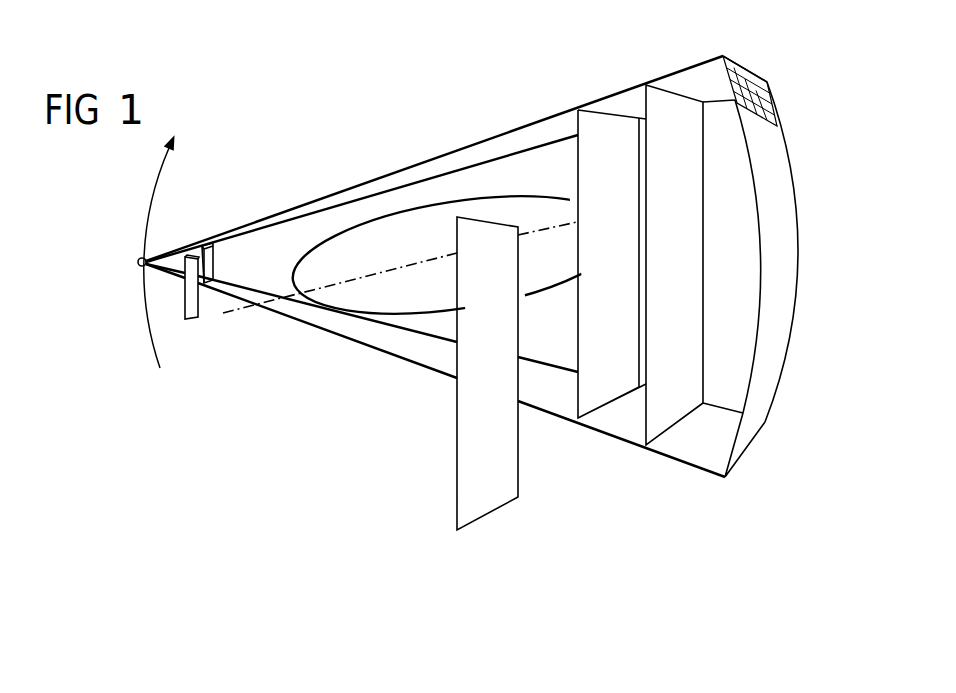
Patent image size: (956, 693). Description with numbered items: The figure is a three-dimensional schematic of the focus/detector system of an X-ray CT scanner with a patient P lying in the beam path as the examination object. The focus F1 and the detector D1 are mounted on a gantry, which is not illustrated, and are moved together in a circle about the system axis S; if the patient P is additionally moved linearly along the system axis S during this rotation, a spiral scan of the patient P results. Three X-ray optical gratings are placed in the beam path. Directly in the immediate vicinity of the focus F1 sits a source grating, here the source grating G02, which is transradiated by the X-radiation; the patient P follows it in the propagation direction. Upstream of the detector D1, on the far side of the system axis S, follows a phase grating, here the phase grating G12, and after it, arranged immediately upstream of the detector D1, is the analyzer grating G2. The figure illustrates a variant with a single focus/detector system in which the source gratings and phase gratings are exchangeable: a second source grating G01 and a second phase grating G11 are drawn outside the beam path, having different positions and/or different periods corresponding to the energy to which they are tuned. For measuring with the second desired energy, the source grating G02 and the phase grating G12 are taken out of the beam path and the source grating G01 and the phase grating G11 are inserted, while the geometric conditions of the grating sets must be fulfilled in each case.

The focus F1 is at (139, 261).
The source grating G01 is at (192, 319).
The source grating G02 is at (211, 244).
The system axis S is at (238, 312).
The patient P is at (395, 313).
The phase grating G11 is at (457, 489).
The phase grating G12 is at (603, 108).
The analyzer grating G2 is at (680, 93).
The detector D1 is at (787, 152).